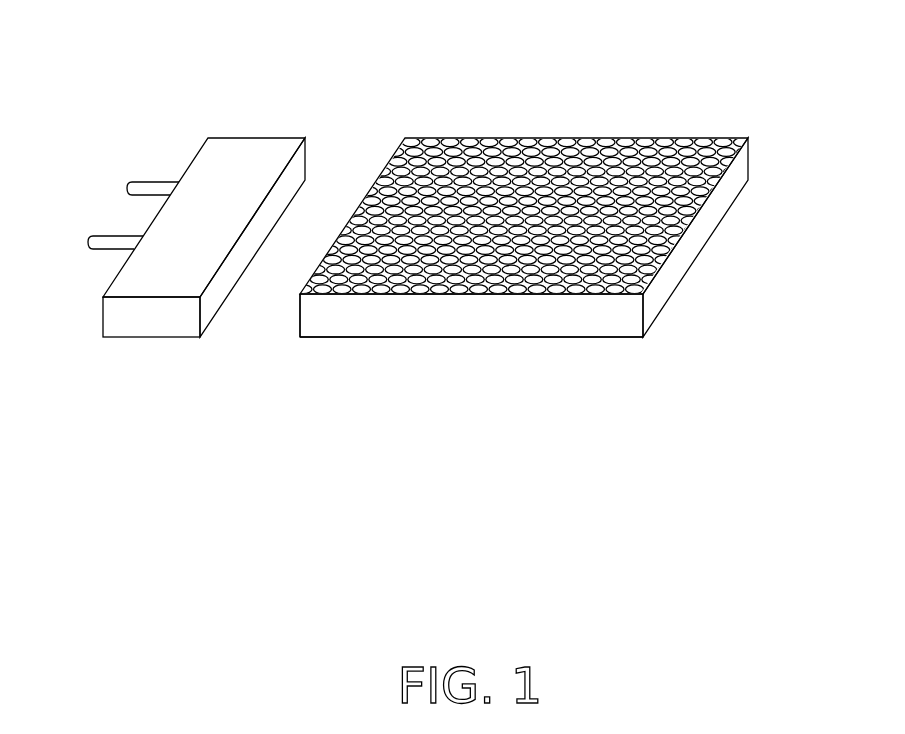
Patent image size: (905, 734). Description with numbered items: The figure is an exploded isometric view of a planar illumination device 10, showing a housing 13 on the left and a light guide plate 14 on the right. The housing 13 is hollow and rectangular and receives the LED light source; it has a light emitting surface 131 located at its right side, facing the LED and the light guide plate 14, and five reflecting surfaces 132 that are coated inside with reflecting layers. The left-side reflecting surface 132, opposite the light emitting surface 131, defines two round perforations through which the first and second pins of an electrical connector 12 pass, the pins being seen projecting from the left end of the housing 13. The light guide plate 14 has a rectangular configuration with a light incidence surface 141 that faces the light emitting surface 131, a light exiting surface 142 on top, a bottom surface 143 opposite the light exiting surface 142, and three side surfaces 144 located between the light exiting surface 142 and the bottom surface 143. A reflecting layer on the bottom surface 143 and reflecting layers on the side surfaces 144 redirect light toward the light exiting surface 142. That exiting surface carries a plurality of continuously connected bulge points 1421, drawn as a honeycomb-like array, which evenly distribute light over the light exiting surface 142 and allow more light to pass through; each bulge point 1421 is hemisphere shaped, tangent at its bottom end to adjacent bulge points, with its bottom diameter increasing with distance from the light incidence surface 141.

The planar illumination device 10 is at (453, 52).
The electrical connector 12 is at (112, 242).
The housing 13 is at (255, 128).
The light emitting surface 131 is at (215, 287).
The reflecting surfaces 132 is at (127, 282).
The light guide plate 14 is at (557, 127).
The light incidence surface 141 is at (298, 315).
The light exiting surface 142 is at (647, 140).
The bulge points 1421 is at (677, 190).
The bottom surface 143 is at (412, 337).
The side surfaces 144 is at (648, 300).